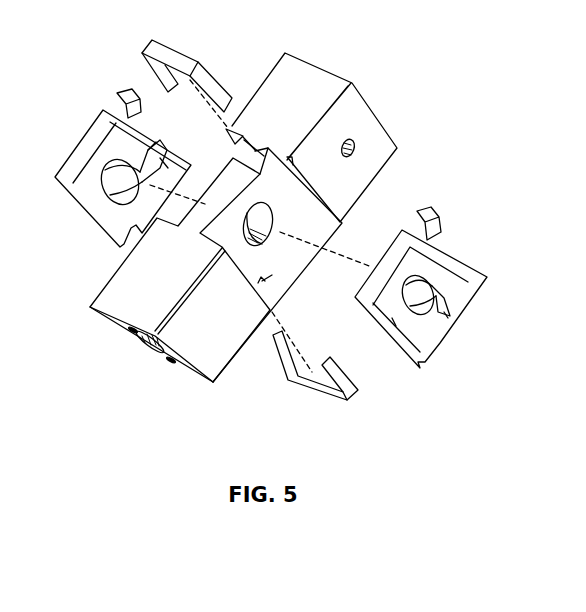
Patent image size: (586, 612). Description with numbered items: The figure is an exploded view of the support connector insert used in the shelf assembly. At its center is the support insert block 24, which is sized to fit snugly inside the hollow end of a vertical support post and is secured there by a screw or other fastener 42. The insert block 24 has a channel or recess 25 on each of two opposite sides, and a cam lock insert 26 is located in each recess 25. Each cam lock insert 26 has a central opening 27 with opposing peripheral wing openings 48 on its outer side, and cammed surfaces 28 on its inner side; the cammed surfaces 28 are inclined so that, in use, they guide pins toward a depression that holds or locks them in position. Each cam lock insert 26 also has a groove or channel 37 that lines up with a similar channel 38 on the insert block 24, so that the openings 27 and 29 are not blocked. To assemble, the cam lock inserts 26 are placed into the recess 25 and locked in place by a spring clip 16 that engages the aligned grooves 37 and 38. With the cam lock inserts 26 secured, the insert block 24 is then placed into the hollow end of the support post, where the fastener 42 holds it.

The spring clip 16 is at (216, 80).
The support insert block 24 is at (381, 107).
The channel or recess 25 is at (272, 274).
The cam lock insert 26 is at (93, 125).
The central opening 27 is at (108, 174).
The cammed surfaces 28 is at (160, 158).
The opening 29 is at (272, 214).
The groove or channel 37 is at (116, 100).
The channel 38 is at (262, 157).
The screw or other fastener 42 is at (148, 143).
The peripheral wing openings 48 is at (447, 322).